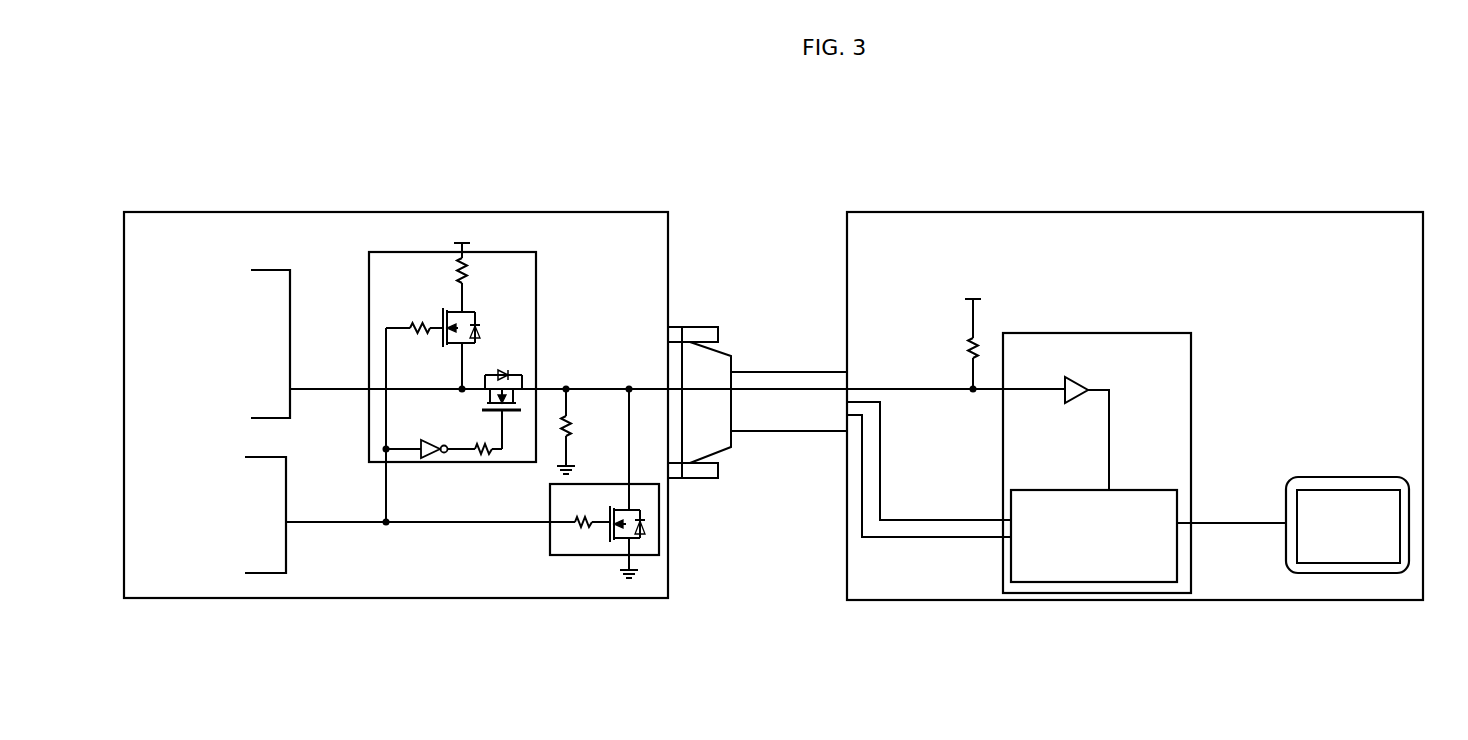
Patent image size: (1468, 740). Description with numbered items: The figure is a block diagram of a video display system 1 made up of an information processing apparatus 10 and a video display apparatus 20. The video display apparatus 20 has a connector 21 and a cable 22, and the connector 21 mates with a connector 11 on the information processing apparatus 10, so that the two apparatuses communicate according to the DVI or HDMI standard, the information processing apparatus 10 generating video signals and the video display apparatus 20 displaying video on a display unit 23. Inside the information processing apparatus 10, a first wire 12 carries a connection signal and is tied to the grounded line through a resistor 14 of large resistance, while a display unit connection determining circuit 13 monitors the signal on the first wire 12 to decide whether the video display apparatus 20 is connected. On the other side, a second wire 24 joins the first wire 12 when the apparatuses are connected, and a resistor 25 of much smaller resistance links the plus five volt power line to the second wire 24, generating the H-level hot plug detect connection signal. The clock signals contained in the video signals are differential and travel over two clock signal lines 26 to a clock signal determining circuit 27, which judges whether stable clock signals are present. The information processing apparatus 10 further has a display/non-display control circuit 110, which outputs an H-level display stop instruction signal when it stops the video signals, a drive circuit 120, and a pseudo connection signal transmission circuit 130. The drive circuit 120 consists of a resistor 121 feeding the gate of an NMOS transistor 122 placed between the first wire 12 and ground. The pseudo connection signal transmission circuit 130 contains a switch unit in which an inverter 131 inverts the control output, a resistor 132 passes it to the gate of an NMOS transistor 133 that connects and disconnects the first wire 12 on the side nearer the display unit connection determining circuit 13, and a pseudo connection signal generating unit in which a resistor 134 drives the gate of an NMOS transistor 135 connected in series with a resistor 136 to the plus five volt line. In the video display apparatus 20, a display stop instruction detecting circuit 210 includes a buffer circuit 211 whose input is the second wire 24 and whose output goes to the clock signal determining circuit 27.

The video display system 1 is at (862, 138).
The information processing apparatus 10 is at (355, 212).
The connector 11 is at (676, 325).
The first wire 12 is at (593, 387).
The display unit connection determining circuit 13 is at (268, 270).
The resistor 14 is at (570, 425).
The video display apparatus 20 is at (1121, 212).
The connector 21 is at (718, 352).
The cable 22 is at (790, 371).
The display unit 23 is at (1335, 477).
The second wire 24 is at (904, 387).
The resistor 25 is at (970, 340).
The clock signal lines 26 is at (880, 456).
The clock signal determining circuit 27 is at (1125, 490).
The display/non-display control circuit 110 is at (252, 457).
The drive circuit 120 is at (550, 541).
The resistor 121 is at (584, 514).
The NMOS transistor 122 is at (641, 498).
The pseudo connection signal transmission circuit 130 is at (536, 264).
The inverter 131 is at (428, 459).
The resistor 132 is at (484, 459).
The NMOS transistor 133 is at (518, 400).
The resistor 134 is at (418, 325).
The NMOS transistor 135 is at (455, 308).
The resistor 136 is at (468, 268).
The display stop instruction detecting circuit 210 is at (1130, 333).
The buffer circuit 211 is at (1084, 380).